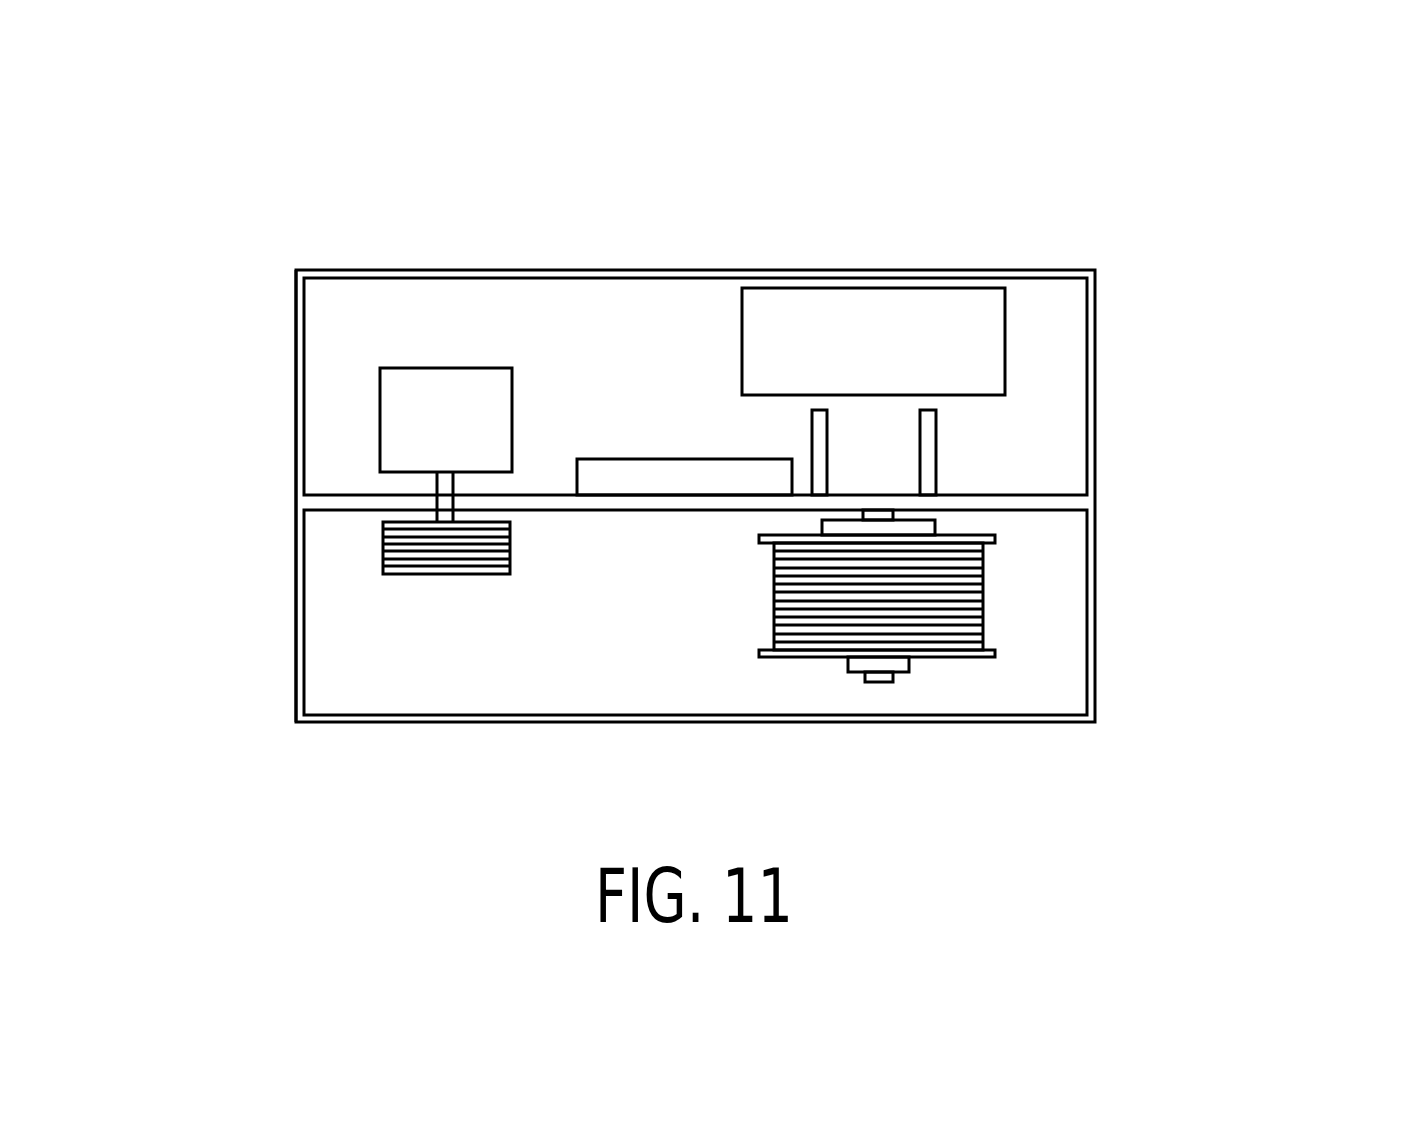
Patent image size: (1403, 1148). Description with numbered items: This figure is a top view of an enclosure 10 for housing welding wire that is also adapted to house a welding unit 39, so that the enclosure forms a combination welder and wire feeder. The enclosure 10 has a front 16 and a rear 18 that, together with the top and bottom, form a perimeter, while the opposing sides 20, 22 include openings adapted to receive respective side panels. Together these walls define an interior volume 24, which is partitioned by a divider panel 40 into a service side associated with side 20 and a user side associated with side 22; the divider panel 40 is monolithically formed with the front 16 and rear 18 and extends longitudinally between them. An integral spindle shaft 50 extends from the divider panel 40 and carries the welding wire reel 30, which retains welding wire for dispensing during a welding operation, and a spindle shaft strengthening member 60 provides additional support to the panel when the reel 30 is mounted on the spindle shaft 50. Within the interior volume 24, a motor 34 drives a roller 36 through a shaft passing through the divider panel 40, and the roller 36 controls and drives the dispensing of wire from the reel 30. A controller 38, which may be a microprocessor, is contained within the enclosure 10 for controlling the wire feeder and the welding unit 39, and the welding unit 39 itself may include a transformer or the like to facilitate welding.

The enclosure 10 is at (1299, 157).
The front 16 is at (296, 308).
The rear 18 is at (1095, 322).
The side 20 is at (586, 278).
The side 22 is at (356, 722).
The interior volume 24 is at (378, 324).
The welding wire reel 30 is at (780, 660).
The motor 34 is at (512, 394).
The roller 36 is at (452, 575).
The controller 38 is at (678, 459).
The welding unit 39 is at (902, 305).
The divider panel 40 is at (640, 511).
The spindle shaft 50 is at (893, 677).
The spindle shaft strengthening member 60 is at (827, 431).